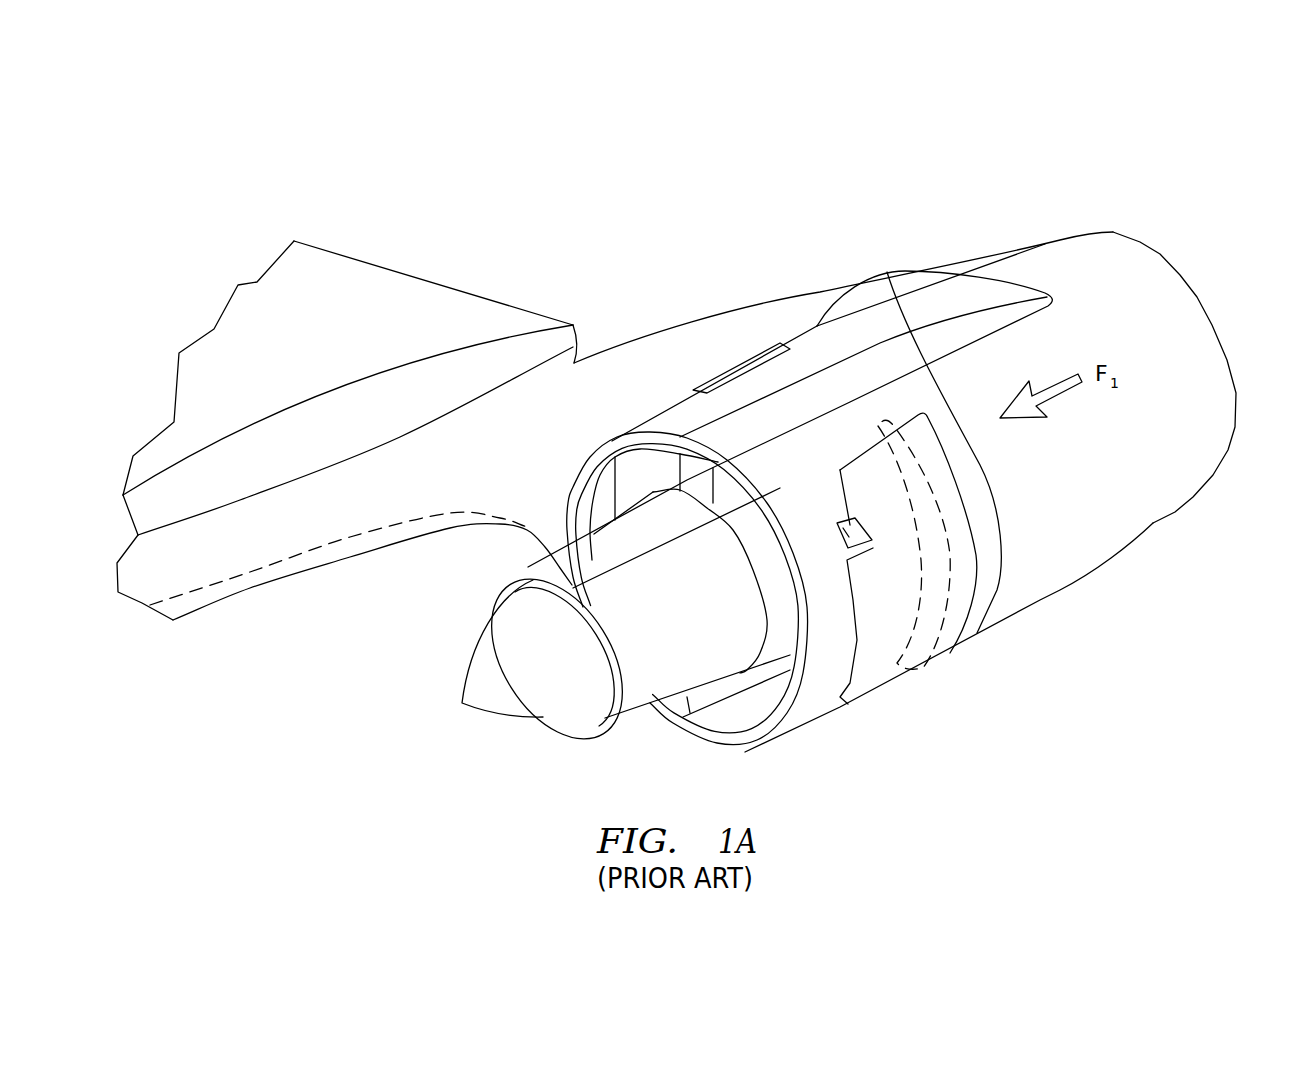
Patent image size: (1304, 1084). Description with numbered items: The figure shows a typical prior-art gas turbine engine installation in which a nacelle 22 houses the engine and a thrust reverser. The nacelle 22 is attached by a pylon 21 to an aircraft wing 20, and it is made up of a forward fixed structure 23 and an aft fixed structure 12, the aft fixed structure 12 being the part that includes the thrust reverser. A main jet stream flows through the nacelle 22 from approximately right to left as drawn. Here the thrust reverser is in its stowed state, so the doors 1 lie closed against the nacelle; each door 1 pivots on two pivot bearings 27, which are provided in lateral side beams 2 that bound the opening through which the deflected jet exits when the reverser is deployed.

The door 1 is at (875, 657).
The lateral side beam 2 is at (857, 420).
The aft fixed structure 12 is at (815, 693).
The aircraft wing 20 is at (571, 364).
The pylon 21 is at (153, 583).
The nacelle 22 is at (1066, 181).
The forward fixed structure 23 is at (1100, 537).
The pivot bearing 27 is at (845, 527).